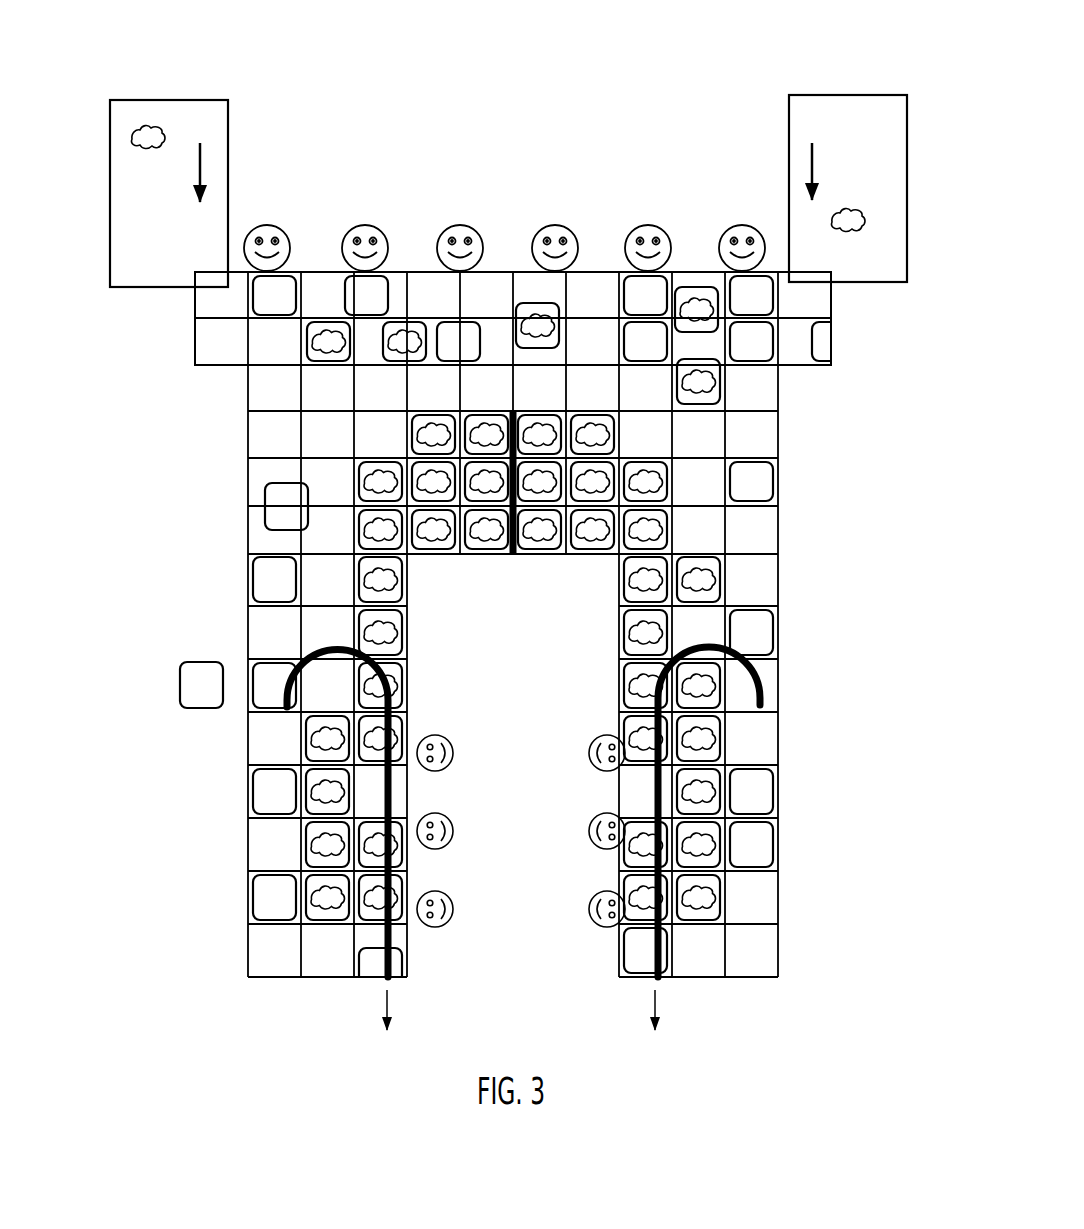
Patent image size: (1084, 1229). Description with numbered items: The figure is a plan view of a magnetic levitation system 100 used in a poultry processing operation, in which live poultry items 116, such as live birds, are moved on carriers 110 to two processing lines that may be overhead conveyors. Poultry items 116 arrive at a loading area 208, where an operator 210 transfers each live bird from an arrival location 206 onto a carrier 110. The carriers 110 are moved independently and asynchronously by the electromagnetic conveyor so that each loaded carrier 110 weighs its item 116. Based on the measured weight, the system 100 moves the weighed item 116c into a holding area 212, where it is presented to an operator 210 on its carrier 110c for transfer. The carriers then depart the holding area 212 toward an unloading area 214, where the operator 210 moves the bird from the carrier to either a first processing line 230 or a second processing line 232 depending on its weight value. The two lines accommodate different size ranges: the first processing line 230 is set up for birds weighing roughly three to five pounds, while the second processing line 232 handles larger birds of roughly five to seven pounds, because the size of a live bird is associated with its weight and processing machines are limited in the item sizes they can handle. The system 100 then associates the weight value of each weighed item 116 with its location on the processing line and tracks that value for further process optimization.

The magnetic levitation system 100 is at (679, 100).
The carrier 110 is at (268, 310).
The carrier 110c is at (405, 662).
The item 116 is at (150, 127).
The weighed item 116c is at (393, 692).
The arrival location 206 is at (93, 275).
The loading area 208 is at (166, 323).
The operator 210 is at (267, 224).
The holding area 212 is at (197, 483).
The unloading area 214 is at (219, 826).
The first processing line 230 is at (320, 643).
The second processing line 232 is at (776, 683).